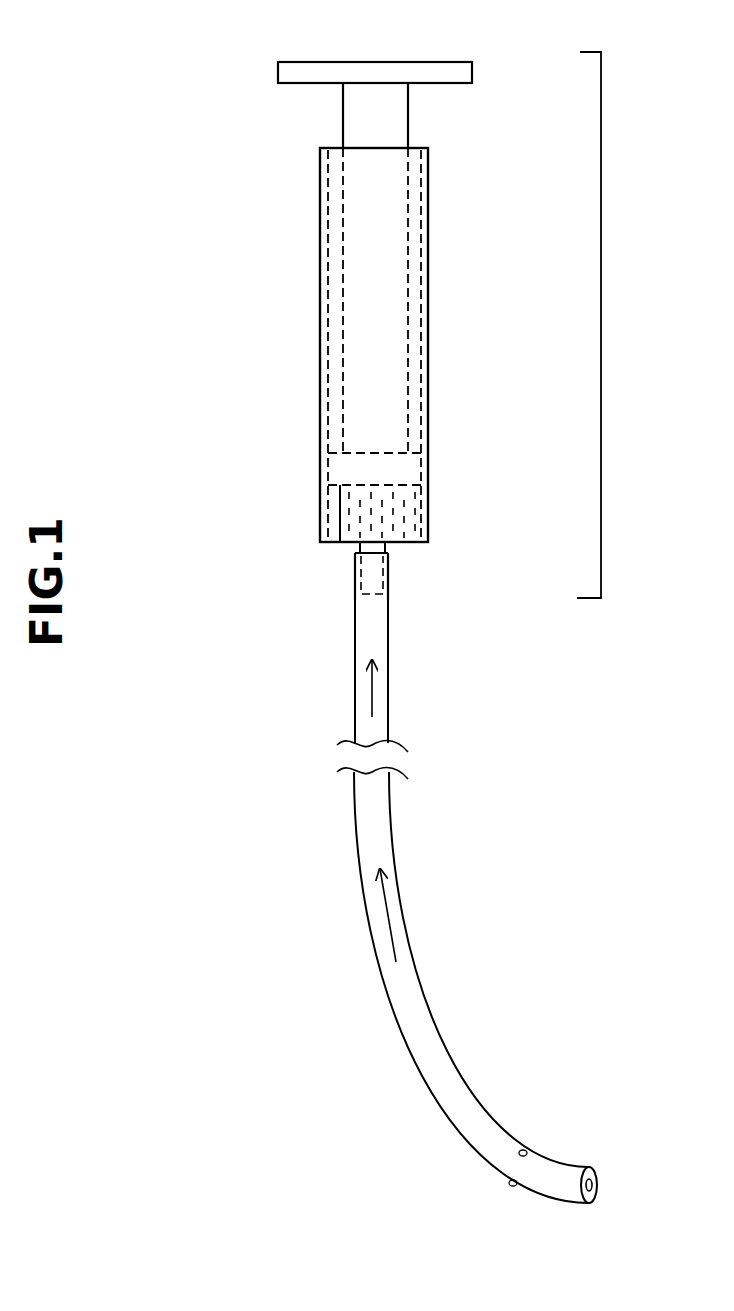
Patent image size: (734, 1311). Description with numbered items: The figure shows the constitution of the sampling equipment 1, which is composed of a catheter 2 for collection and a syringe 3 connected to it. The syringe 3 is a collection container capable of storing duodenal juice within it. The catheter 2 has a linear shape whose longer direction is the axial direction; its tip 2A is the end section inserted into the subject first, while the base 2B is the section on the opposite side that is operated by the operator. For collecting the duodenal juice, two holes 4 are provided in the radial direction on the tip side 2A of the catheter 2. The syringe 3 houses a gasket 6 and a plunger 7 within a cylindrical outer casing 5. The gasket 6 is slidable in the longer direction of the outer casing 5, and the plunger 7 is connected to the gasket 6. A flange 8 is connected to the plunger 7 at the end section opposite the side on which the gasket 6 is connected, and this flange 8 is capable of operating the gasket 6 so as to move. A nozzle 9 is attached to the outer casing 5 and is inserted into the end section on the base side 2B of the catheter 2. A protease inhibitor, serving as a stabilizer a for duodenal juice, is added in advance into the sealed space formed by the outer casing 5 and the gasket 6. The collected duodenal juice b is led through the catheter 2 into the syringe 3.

The sampling equipment 1 is at (208, 506).
The catheter 2 is at (355, 641).
The tip 2A is at (595, 1178).
The base 2B is at (355, 582).
The syringe 3 is at (601, 363).
The holes 4 is at (524, 1150).
The outer casing 5 is at (320, 312).
The gasket 6 is at (369, 452).
The plunger 7 is at (408, 118).
The flange 8 is at (433, 62).
The nozzle 9 is at (373, 596).
The stabilizer a is at (408, 513).
The duodenal juice b is at (375, 692).